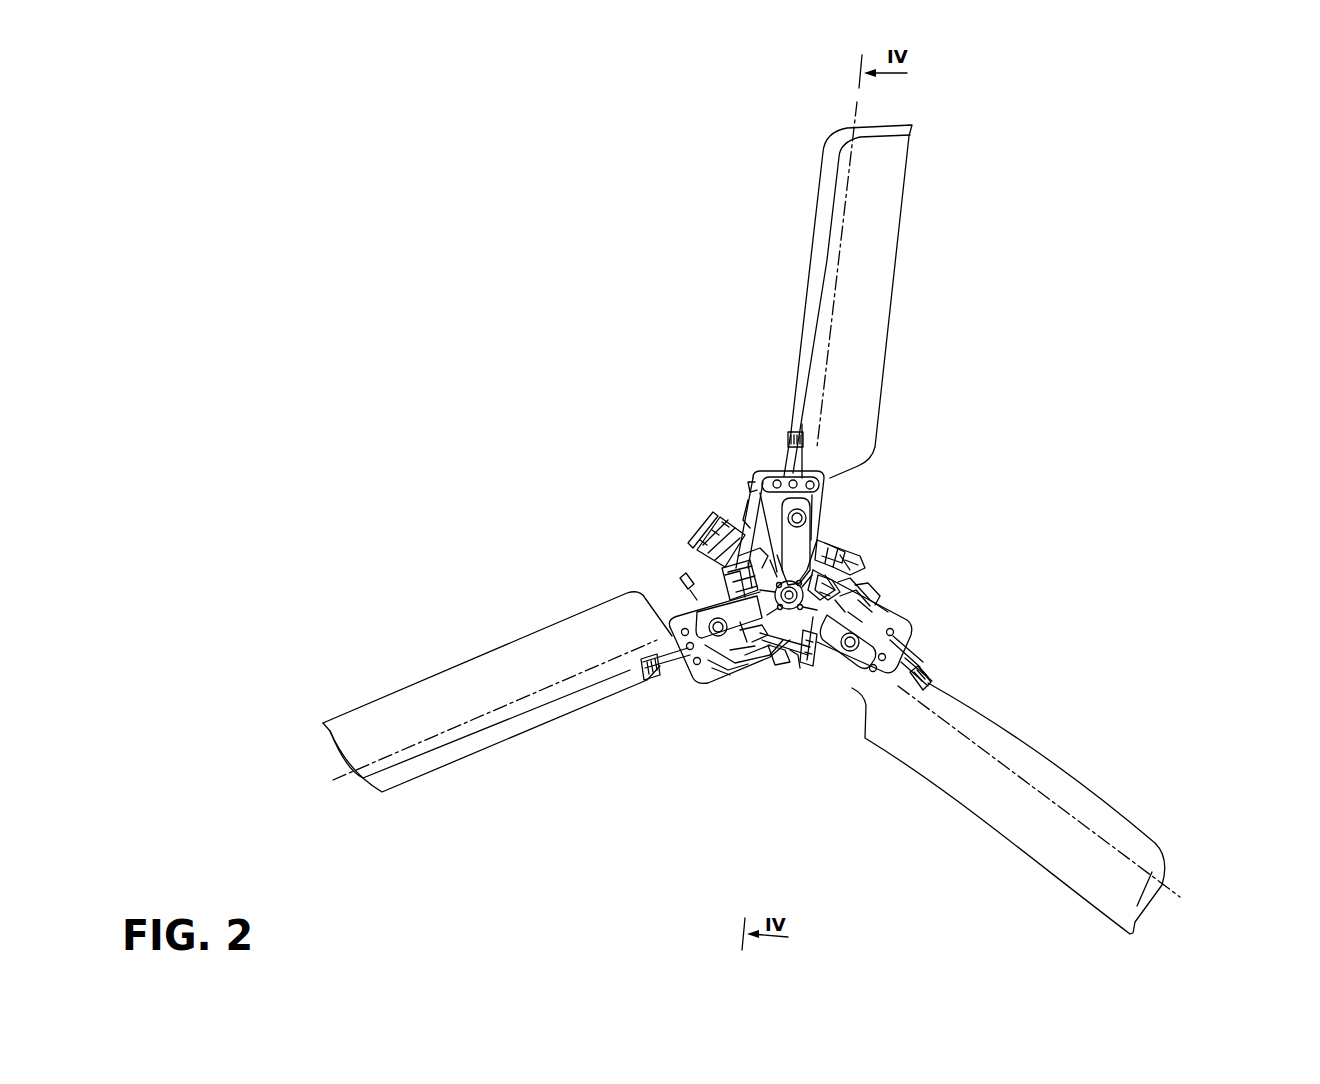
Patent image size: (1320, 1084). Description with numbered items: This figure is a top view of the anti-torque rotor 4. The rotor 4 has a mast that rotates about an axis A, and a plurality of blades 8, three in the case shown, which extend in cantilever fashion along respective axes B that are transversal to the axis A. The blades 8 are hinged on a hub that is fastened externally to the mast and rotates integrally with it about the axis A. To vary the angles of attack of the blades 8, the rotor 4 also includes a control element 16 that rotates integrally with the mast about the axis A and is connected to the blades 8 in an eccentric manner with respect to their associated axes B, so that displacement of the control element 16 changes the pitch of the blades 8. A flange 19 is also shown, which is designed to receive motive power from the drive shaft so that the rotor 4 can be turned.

The rotor 4 is at (1095, 251).
The blades 8 is at (883, 278).
The control element 16 is at (868, 531).
The flange 19 is at (822, 680).
The axis A is at (865, 576).
The axes B is at (858, 112).